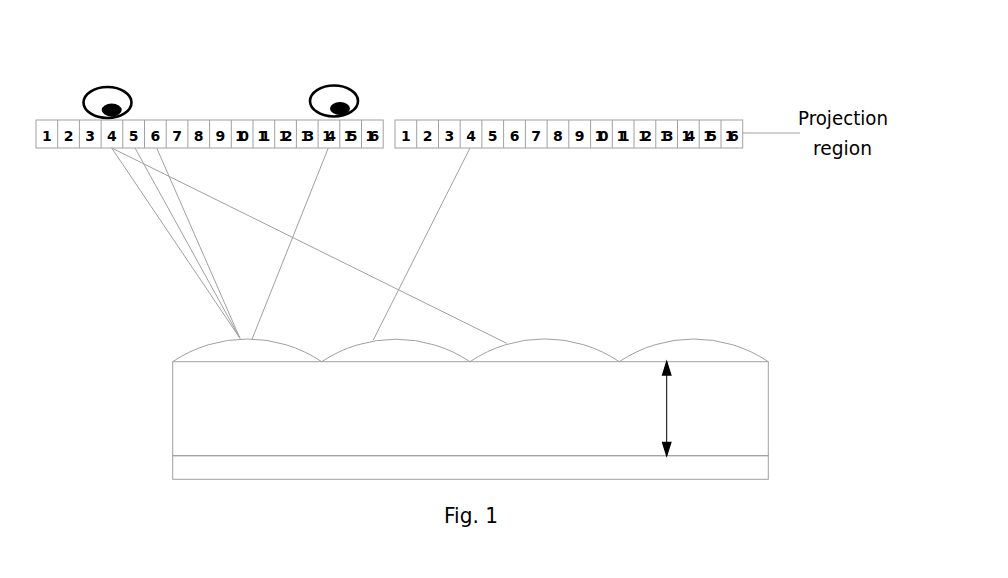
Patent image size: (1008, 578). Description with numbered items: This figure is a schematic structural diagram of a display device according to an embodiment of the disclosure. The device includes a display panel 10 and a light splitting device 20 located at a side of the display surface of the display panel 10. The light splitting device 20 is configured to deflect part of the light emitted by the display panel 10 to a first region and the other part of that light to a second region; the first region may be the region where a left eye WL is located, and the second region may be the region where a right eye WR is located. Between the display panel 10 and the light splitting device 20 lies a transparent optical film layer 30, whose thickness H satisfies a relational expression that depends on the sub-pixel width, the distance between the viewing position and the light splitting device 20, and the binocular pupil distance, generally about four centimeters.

The display panel 10 is at (757, 466).
The light splitting device 20 is at (748, 348).
The transparent optical film layer 30 is at (752, 407).
The left eye WL is at (121, 88).
The right eye WR is at (337, 87).
The thickness of the transparent optical film layer H is at (678, 409).